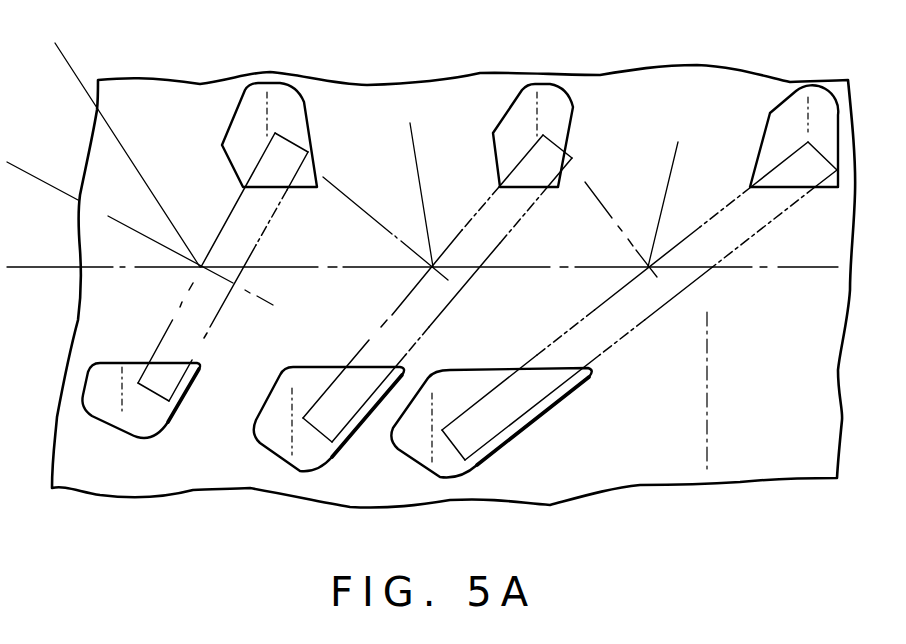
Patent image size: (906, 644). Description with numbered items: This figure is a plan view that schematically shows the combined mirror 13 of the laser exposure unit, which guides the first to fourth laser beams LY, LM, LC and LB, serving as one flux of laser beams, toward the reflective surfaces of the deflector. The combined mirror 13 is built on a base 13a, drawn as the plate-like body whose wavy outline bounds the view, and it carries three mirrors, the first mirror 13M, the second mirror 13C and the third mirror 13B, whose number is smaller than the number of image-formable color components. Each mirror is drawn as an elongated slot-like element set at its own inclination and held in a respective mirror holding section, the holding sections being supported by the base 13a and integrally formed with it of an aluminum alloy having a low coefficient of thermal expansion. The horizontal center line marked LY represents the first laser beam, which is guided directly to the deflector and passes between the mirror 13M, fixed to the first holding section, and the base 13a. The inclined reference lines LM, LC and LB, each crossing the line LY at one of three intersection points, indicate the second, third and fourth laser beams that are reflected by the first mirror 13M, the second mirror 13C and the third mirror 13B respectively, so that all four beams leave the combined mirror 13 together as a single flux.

The combined mirror 13 is at (625, 495).
The base 13a is at (715, 465).
The third mirror 13B is at (213, 245).
The second mirror 13C is at (452, 242).
The first mirror 13M is at (682, 237).
The fourth laser beam LB is at (67, 62).
The third laser beam LC is at (417, 169).
The second laser beam LM is at (666, 195).
The first laser beam LY is at (778, 268).